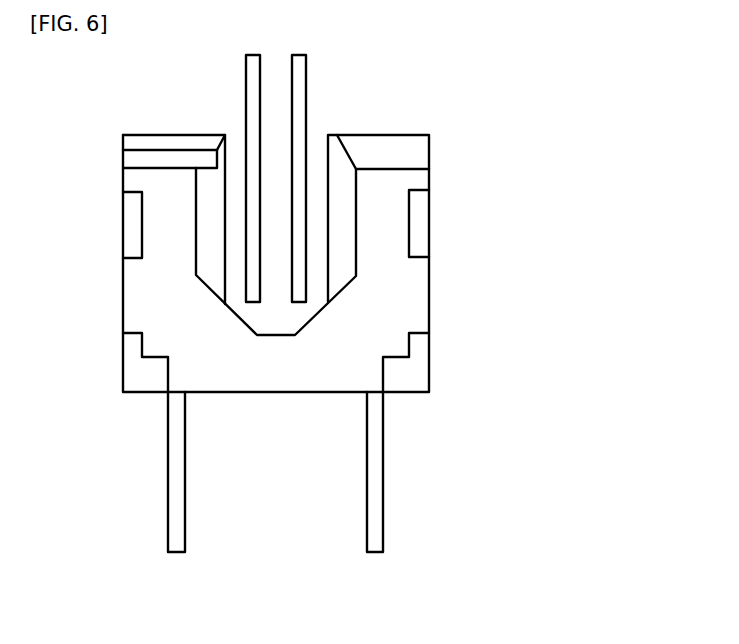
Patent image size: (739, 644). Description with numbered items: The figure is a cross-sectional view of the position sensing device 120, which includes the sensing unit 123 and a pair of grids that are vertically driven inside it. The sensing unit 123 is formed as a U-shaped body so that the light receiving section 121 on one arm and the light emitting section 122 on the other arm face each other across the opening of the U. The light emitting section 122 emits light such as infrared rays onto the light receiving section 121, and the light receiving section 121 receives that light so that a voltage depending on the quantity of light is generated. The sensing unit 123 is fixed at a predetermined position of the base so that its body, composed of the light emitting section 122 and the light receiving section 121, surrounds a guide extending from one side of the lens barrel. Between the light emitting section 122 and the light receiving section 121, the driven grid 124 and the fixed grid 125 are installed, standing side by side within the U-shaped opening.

The position sensing device 120 is at (475, 132).
The light receiving section 121 is at (203, 178).
The light emitting section 122 is at (343, 178).
The sensing unit 123 is at (407, 290).
The driven grid 124 is at (253, 77).
The fixed grid 125 is at (300, 77).